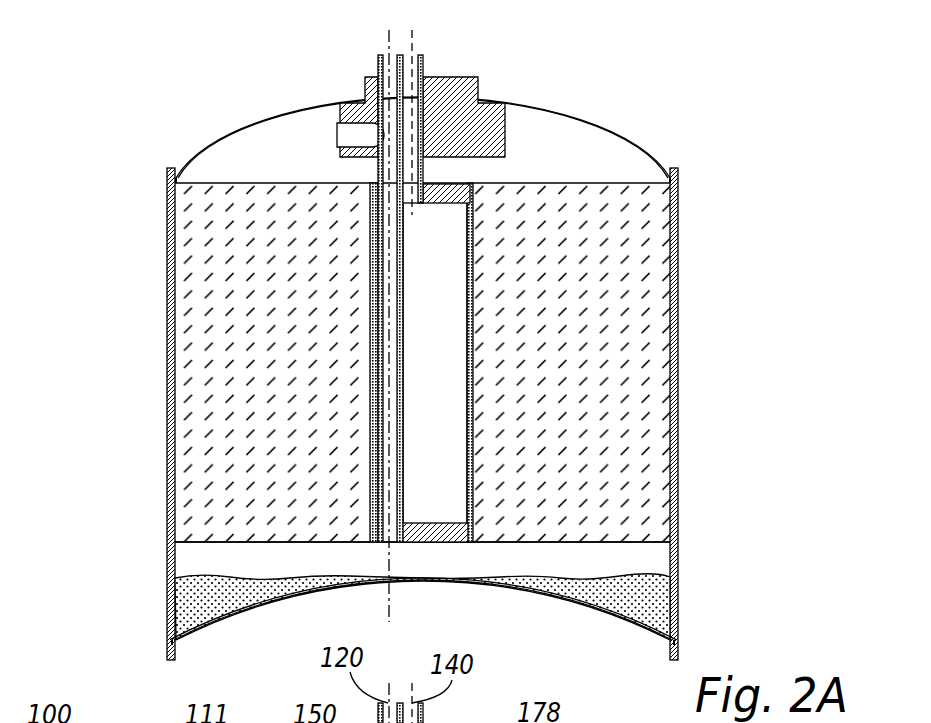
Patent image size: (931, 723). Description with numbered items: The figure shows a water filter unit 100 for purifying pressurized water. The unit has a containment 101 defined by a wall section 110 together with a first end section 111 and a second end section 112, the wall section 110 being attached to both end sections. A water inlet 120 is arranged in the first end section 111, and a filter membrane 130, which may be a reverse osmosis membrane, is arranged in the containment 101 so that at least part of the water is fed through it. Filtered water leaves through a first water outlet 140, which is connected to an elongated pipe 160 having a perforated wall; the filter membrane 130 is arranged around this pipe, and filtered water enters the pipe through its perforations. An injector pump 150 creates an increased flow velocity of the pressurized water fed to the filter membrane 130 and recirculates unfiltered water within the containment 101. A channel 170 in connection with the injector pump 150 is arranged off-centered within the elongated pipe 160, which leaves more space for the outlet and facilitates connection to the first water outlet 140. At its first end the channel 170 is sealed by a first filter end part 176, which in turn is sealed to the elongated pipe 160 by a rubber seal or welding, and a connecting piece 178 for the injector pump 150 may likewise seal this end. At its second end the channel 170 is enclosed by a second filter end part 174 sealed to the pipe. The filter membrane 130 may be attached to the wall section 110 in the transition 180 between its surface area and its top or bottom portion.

The water filter unit 100 is at (148, 60).
The containment 101 is at (306, 570).
The wall section 110 is at (167, 364).
The first end section 111 is at (244, 127).
The second end section 112 is at (236, 611).
The water inlet 120 is at (388, 55).
The filter membrane 130 is at (220, 294).
The first water outlet 140 is at (412, 55).
The injector pump 150 is at (383, 131).
The elongated pipe 160 is at (472, 361).
The channel 170 is at (400, 436).
The second filter end part 174 is at (428, 530).
The first filter end part 176 is at (447, 193).
The connecting piece 178 is at (455, 95).
The transition 180 is at (678, 183).